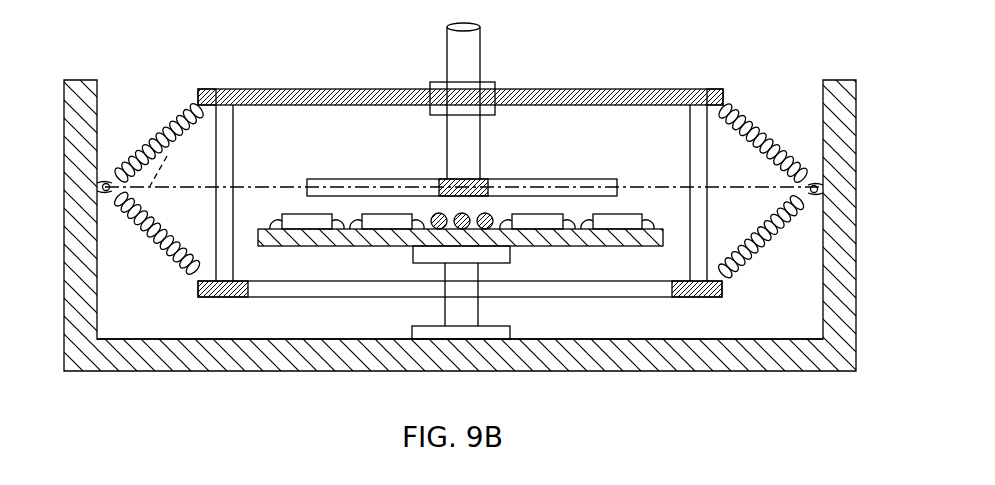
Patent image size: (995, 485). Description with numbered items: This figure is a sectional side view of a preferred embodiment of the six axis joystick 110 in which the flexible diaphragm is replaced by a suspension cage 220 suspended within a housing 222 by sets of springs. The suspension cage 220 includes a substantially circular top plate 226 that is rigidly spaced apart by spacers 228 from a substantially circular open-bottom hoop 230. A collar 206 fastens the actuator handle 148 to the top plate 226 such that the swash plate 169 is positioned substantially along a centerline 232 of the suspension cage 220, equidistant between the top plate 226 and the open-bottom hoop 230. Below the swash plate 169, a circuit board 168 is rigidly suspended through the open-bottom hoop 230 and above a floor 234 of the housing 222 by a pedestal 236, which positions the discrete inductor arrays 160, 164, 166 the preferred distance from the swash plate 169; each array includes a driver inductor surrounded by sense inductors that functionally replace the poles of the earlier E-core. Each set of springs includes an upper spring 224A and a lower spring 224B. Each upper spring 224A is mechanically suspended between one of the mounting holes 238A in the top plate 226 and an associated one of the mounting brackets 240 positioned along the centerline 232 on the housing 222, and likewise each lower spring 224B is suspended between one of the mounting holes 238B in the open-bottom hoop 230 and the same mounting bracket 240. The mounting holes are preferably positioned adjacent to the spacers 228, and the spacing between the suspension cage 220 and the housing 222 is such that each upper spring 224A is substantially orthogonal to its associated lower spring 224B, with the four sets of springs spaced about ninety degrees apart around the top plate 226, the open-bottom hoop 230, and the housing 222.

The six axis joystick 110 is at (356, 77).
The actuator handle 148 is at (482, 31).
The discrete inductor array 160 is at (619, 204).
The discrete inductor array 164 is at (303, 204).
The discrete inductor array 166 is at (494, 207).
The circuit board 168 is at (646, 246).
The swash plate 169 is at (390, 179).
The collar 206 is at (494, 82).
The suspension cage 220 is at (650, 75).
The housing 222 is at (200, 371).
The upper spring 224A is at (188, 107).
The lower spring 224B is at (164, 268).
The top plate 226 is at (318, 89).
The spacers 228 is at (233, 125).
The open-bottom hoop 230 is at (568, 297).
The centerline 232 is at (176, 166).
The floor 234 is at (352, 339).
The pedestal 236 is at (478, 306).
The mounting holes 238A is at (203, 89).
The mounting holes 238B is at (206, 297).
The mounting brackets 240 is at (114, 190).